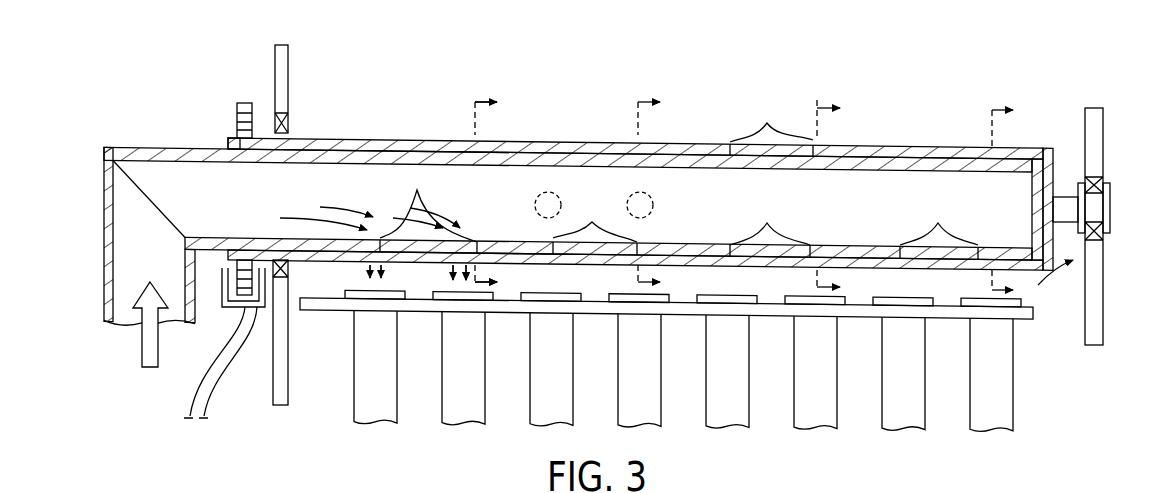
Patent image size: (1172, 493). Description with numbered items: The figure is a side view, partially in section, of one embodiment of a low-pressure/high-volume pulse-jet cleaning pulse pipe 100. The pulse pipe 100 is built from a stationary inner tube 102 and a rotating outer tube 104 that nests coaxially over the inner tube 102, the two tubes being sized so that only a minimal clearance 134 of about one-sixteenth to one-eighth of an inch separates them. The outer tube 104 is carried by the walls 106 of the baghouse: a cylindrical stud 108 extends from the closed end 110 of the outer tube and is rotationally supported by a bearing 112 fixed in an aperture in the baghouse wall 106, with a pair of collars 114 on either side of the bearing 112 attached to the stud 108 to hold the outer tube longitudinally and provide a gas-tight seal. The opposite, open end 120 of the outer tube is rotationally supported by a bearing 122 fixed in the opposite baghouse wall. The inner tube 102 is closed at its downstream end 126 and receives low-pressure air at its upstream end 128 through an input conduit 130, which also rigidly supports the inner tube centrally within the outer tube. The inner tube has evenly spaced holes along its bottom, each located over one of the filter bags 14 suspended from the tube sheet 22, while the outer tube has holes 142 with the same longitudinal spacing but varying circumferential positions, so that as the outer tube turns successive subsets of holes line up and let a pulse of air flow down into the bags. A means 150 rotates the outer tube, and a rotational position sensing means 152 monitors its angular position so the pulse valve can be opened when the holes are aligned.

The filter bags 14 is at (355, 386).
The tube sheet 22 is at (1013, 313).
The pulse pipe 100 is at (624, 232).
The stationary inner tube 102 is at (561, 224).
The rotating outer tube 104 is at (403, 140).
The baghouse wall 106 is at (285, 59).
The cylindrical stud 108 is at (1067, 218).
The closed end of the outer tube 110 is at (1067, 180).
The bearing 112 is at (1102, 188).
The collars 114 is at (1080, 187).
The open end of the outer tube 120 is at (711, 189).
The bearing 122 is at (287, 118).
The downstream end of the inner tube 126 is at (1040, 208).
The upstream end of the inner tube 128 is at (215, 204).
The input conduit 130 is at (178, 298).
The clearance 134 is at (227, 147).
The holes in the outer tube 142 is at (340, 278).
The means to rotate the outer tube 150 is at (238, 120).
The rotational position sensing means 152 is at (257, 310).